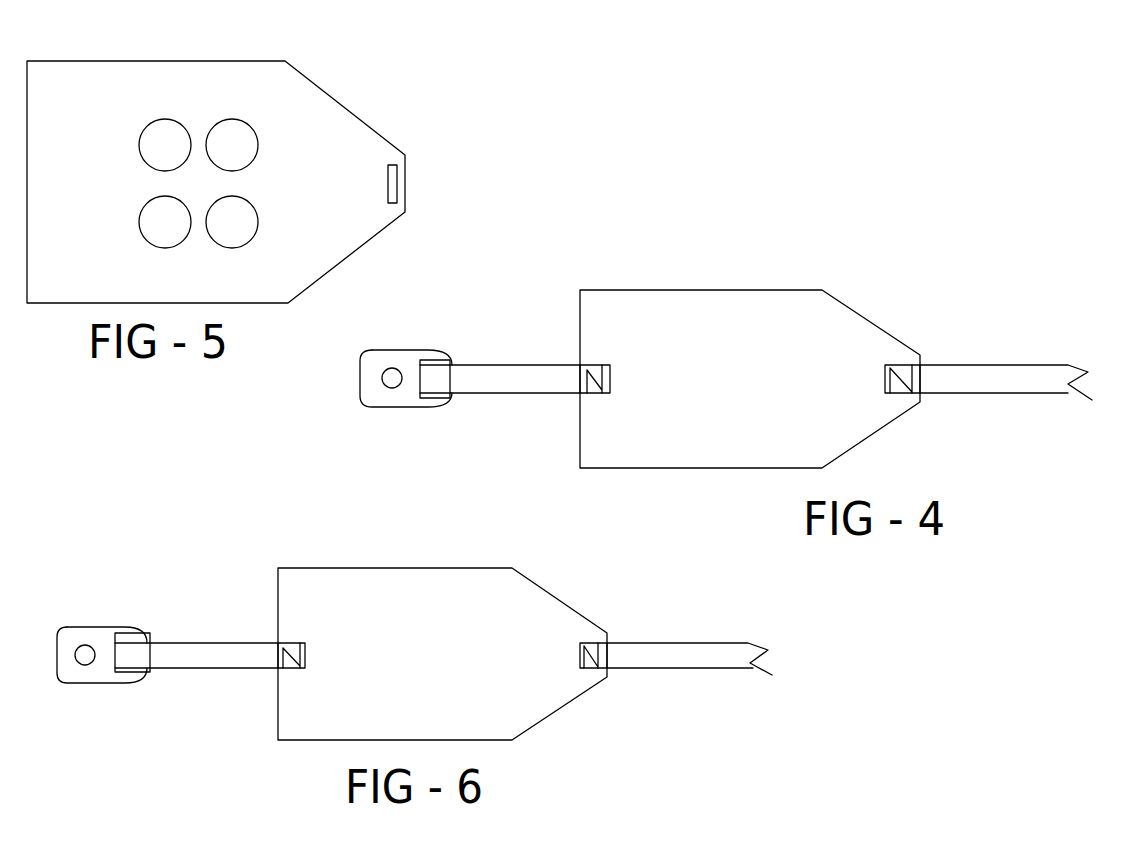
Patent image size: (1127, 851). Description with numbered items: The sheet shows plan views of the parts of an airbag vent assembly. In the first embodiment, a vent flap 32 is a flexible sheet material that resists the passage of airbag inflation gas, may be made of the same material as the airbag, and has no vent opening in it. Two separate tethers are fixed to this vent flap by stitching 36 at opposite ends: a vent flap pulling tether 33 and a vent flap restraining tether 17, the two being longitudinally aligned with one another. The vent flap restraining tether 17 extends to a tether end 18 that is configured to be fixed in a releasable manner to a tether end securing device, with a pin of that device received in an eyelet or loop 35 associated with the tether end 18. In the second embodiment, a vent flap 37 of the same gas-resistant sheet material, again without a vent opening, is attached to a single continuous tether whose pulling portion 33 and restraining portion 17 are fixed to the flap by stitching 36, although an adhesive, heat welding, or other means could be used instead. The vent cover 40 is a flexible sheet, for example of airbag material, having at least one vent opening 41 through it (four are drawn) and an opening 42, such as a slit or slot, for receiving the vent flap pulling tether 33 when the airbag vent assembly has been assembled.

In FIG. 4, the vent flap restraining tether 17 is at (500, 383).
In FIG. 6, the vent flap restraining tether 17 is at (200, 657).
In FIG. 4, the tether end 18 is at (410, 370).
In FIG. 6, the tether end 18 is at (102, 643).
In FIG. 4, the vent flap 32 is at (728, 330).
In FIG. 4, the vent flap pulling tether 33 is at (985, 377).
In FIG. 6, the vent flap pulling tether 33 is at (678, 657).
In FIG. 4, the eyelet or loop 35 is at (393, 388).
In FIG. 4, the stitching 36 is at (597, 395).
In FIG. 6, the stitching 36 is at (290, 673).
In FIG. 6, the vent flap 37 is at (388, 605).
In FIG. 5, the vent cover 40 is at (282, 82).
In FIG. 5, the vent opening 41 is at (220, 140).
In FIG. 5, the opening 42 is at (398, 190).